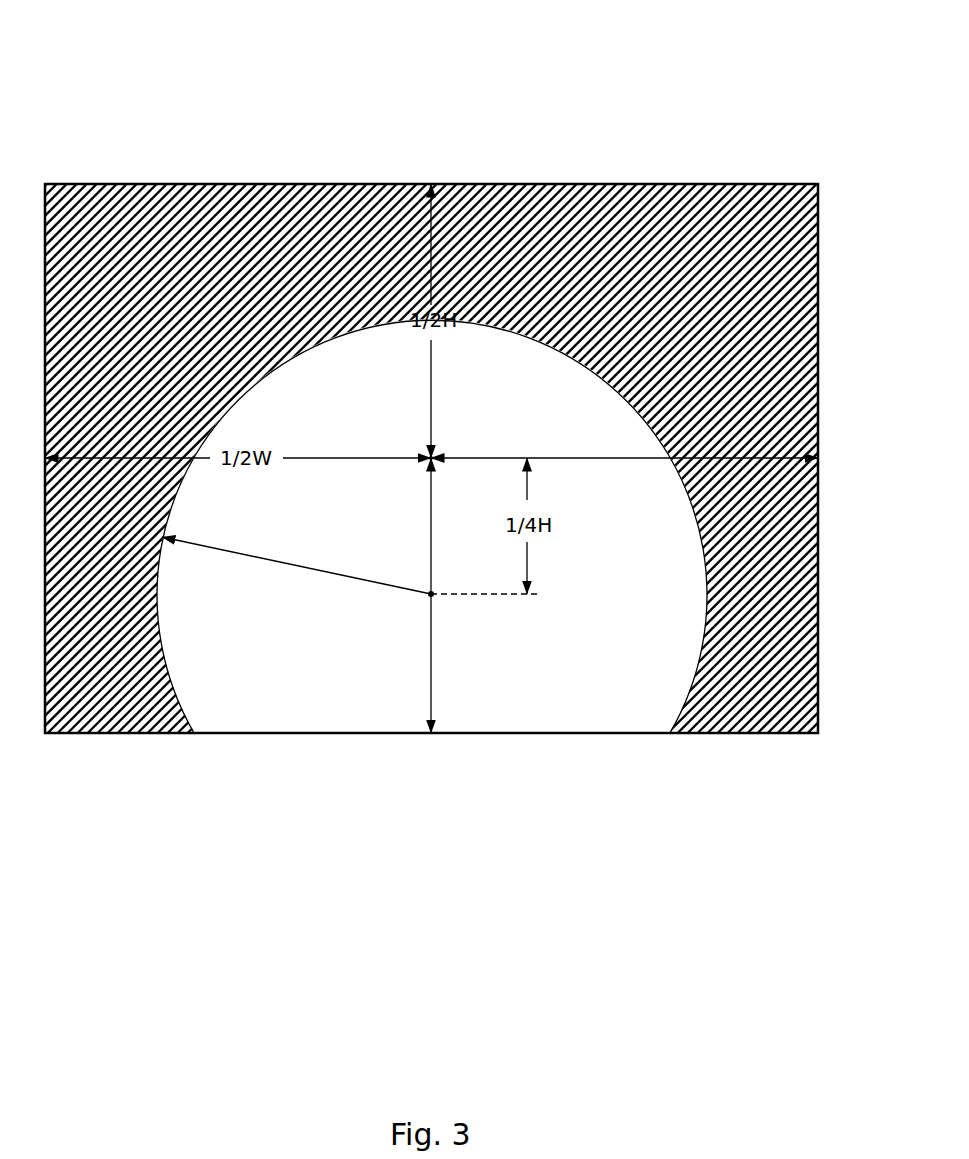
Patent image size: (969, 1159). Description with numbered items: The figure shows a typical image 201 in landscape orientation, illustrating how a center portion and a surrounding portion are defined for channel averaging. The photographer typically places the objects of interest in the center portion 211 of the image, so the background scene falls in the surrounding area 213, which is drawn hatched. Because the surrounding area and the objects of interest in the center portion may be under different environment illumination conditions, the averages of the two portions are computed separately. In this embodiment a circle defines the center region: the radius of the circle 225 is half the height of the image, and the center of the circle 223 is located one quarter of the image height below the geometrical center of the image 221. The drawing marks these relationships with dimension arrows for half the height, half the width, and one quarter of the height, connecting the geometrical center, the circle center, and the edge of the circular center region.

The image 201 is at (815, 97).
The center portion 211 is at (705, 598).
The surrounding area 213 is at (820, 570).
The geometrical center of the image 221 is at (436, 453).
The center of the circle 223 is at (433, 597).
The radius of the circle 225 is at (294, 562).